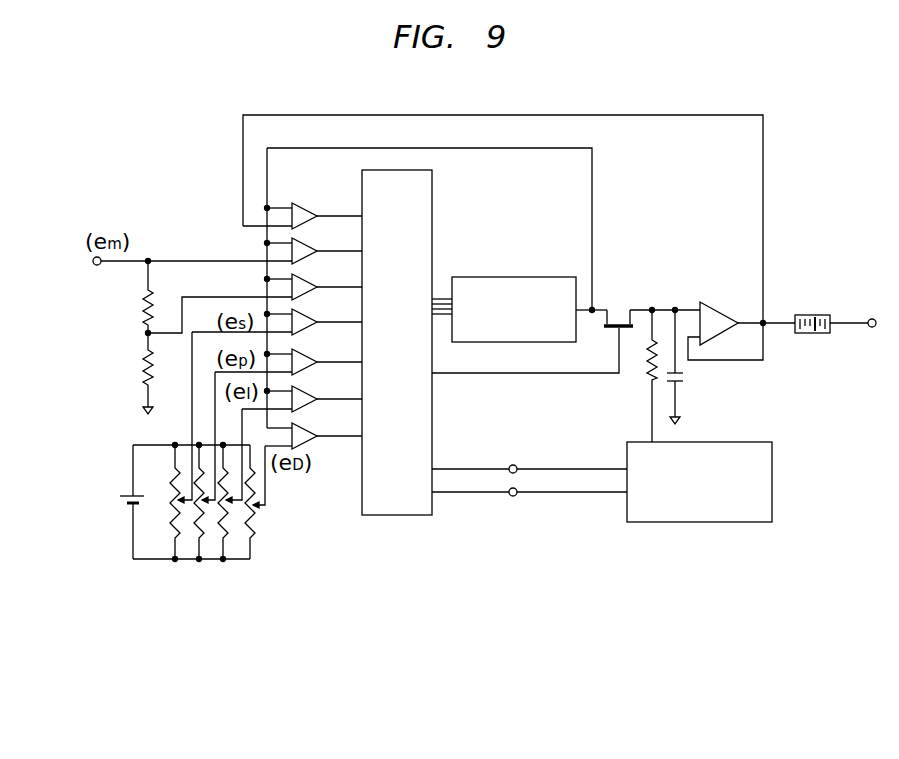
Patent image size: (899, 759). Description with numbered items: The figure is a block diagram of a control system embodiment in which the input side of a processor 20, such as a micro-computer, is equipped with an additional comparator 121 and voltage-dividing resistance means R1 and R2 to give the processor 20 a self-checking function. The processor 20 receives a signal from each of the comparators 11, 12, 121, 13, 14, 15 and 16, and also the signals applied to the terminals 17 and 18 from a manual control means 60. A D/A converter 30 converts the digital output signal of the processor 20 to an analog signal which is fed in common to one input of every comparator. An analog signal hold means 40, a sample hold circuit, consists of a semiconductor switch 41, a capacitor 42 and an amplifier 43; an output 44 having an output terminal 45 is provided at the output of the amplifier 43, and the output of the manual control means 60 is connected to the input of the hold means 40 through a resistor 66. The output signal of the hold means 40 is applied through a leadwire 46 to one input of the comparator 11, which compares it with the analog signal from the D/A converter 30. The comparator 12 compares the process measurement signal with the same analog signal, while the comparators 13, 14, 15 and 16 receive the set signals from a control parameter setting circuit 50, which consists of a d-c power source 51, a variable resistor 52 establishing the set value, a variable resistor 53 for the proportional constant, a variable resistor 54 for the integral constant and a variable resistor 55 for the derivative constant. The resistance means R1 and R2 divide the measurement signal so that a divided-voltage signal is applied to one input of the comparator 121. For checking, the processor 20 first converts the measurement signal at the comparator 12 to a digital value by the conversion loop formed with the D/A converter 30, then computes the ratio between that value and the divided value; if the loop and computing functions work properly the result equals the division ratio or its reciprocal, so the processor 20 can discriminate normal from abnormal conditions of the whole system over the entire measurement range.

The comparator 11 is at (303, 212).
The comparator 12 is at (303, 247).
The comparator 121 is at (303, 283).
The comparator 13 is at (303, 318).
The comparator 14 is at (303, 358).
The comparator 15 is at (303, 395).
The comparator 16 is at (303, 432).
The terminal 17 is at (507, 465).
The terminal 18 is at (512, 496).
The processor 20 is at (432, 195).
The D/A converter 30 is at (516, 277).
The analog signal hold means 40 is at (613, 349).
The semiconductor switch 41 is at (603, 309).
The capacitor 42 is at (684, 378).
The amplifier 43 is at (737, 311).
The output 44 is at (815, 315).
The output terminal 45 is at (872, 327).
The leadwire 46 is at (651, 115).
The control parameter setting circuit 50 is at (201, 462).
The d-c power source 51 is at (134, 495).
The variable resistor 52 is at (174, 511).
The variable resistor 53 is at (198, 538).
The variable resistor 54 is at (223, 532).
The variable resistor 55 is at (268, 507).
The manual control means 60 is at (727, 442).
The resistor 66 is at (650, 366).
The voltage-dividing resistance means R1 is at (146, 306).
The voltage-dividing resistance means R2 is at (146, 364).